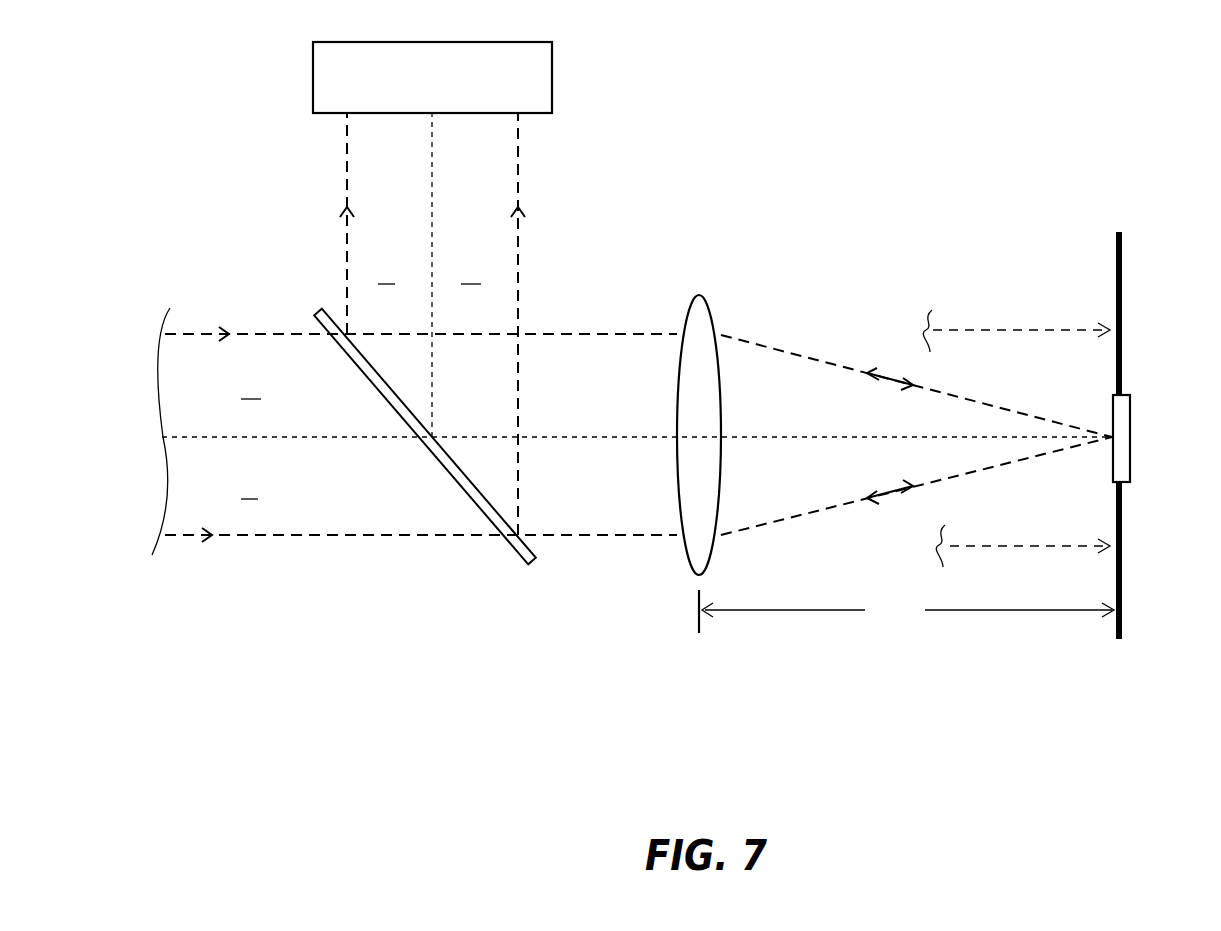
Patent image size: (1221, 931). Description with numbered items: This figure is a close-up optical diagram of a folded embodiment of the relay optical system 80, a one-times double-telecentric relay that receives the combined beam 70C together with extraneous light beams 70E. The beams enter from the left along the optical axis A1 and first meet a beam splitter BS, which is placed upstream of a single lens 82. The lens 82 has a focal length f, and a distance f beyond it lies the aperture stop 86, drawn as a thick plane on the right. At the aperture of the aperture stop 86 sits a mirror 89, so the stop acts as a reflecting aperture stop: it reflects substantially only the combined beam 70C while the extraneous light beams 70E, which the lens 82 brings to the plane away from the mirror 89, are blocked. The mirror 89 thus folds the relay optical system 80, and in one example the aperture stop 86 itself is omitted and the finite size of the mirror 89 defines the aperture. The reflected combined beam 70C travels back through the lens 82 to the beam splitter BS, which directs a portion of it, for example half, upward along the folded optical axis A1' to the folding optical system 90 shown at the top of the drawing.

The relay optical system 80 is at (1082, 92).
The folding optical system 90 is at (450, 92).
The combined beam 70C is at (322, 235).
The extraneous light beams 70E is at (1045, 328).
The lens 82 is at (699, 295).
The aperture stop 86 is at (1116, 280).
The mirror 89 is at (1133, 420).
The beam splitter BS is at (515, 553).
The optical axis A1 is at (638, 459).
The folded optical axis A1' is at (400, 275).
The focal length f is at (906, 611).